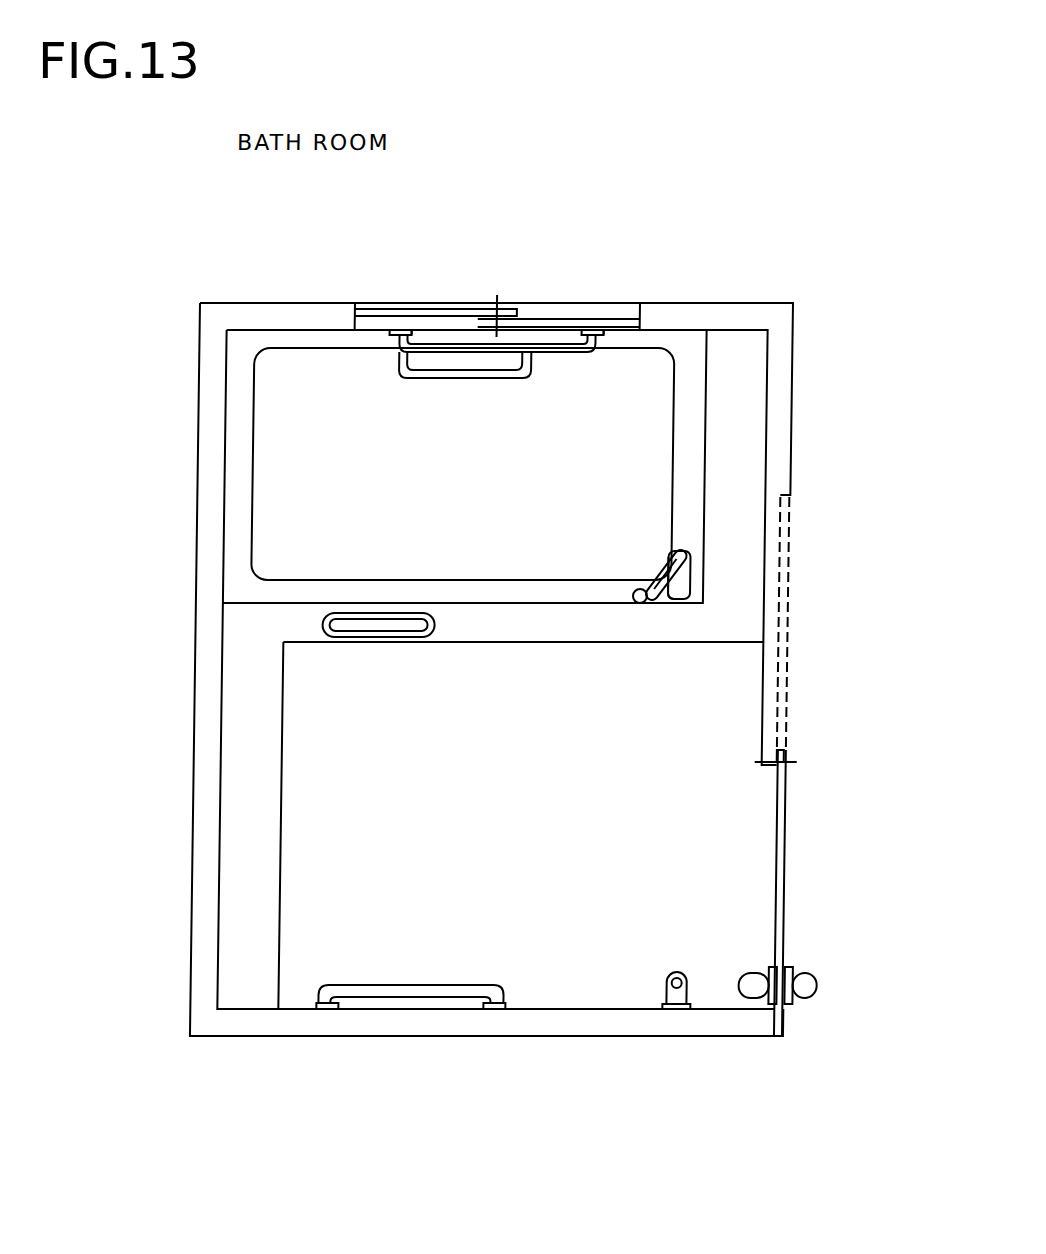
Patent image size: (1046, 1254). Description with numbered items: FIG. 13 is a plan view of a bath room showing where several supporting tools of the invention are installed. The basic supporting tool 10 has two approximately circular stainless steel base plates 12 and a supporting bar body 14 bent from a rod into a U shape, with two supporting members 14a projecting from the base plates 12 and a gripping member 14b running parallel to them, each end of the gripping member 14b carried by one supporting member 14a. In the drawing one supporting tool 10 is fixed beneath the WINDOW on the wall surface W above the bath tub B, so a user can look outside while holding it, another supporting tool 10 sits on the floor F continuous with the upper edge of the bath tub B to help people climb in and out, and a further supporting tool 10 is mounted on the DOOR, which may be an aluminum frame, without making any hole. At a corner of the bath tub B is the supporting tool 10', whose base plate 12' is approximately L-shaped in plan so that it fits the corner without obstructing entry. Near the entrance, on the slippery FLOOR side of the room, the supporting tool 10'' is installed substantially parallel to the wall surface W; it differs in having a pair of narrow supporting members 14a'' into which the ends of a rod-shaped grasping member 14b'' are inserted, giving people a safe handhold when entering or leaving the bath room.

The supporting tool 10 is at (609, 669).
The base plate 12 is at (510, 715).
The supporting bar body 14 is at (662, 568).
The supporting member 14a is at (472, 620).
The gripping member 14b is at (512, 672).
The supporting tool 10' is at (647, 619).
The base plate 12' is at (694, 623).
The supporting tool 10'' is at (639, 960).
The rod-shaped grasping member 14b'' is at (681, 922).
The narrow supporting member 14a'' is at (722, 1052).
The bath tub B is at (688, 345).
The floor F is at (503, 646).
The wall surface W is at (224, 790).
The window WINDOW is at (489, 300).
The floor FLOOR is at (752, 790).
The door DOOR is at (793, 862).